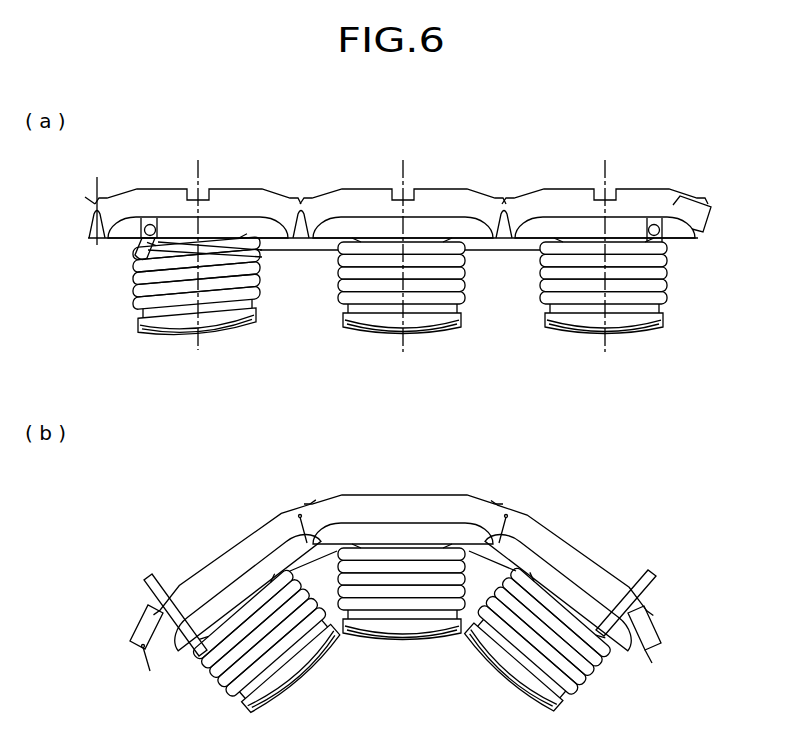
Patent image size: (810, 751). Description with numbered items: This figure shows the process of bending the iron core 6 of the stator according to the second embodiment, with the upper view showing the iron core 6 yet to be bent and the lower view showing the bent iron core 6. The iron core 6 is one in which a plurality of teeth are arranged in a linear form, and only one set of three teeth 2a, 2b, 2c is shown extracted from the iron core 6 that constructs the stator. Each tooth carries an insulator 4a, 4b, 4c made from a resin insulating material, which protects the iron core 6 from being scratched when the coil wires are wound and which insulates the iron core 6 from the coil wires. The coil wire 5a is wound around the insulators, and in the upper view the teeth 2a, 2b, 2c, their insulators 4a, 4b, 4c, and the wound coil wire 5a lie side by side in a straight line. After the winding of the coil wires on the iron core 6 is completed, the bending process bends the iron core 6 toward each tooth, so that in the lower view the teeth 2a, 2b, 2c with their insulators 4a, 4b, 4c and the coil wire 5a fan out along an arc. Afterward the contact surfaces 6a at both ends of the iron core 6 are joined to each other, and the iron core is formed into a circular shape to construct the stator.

The tooth 2a is at (580, 170).
The tooth 2b is at (375, 170).
The tooth 2c is at (173, 170).
The insulator 4a is at (627, 226).
The insulator 4b is at (443, 226).
The insulator 4c is at (237, 226).
The coil wire 5a is at (667, 260).
The iron core 6 is at (698, 207).
The contact surface 6a is at (644, 651).